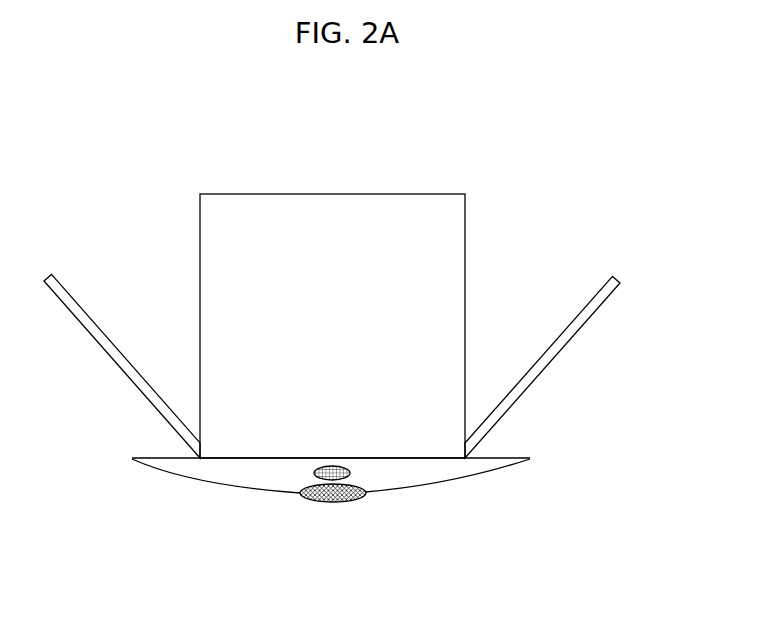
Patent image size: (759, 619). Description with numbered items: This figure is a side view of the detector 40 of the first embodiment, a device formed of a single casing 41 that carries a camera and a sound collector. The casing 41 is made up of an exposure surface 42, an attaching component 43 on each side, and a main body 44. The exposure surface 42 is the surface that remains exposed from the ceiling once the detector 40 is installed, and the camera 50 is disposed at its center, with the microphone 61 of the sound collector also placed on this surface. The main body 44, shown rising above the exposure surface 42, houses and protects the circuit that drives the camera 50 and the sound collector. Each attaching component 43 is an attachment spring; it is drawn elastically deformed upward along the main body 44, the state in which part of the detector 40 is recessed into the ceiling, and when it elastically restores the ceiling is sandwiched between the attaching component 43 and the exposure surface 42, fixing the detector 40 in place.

The detector 40 is at (643, 158).
The casing 41 is at (128, 457).
The exposure surface 42 is at (242, 472).
The attaching component 43 is at (118, 370).
The main body 44 is at (465, 287).
The camera 50 is at (305, 498).
The microphone 61 is at (350, 473).